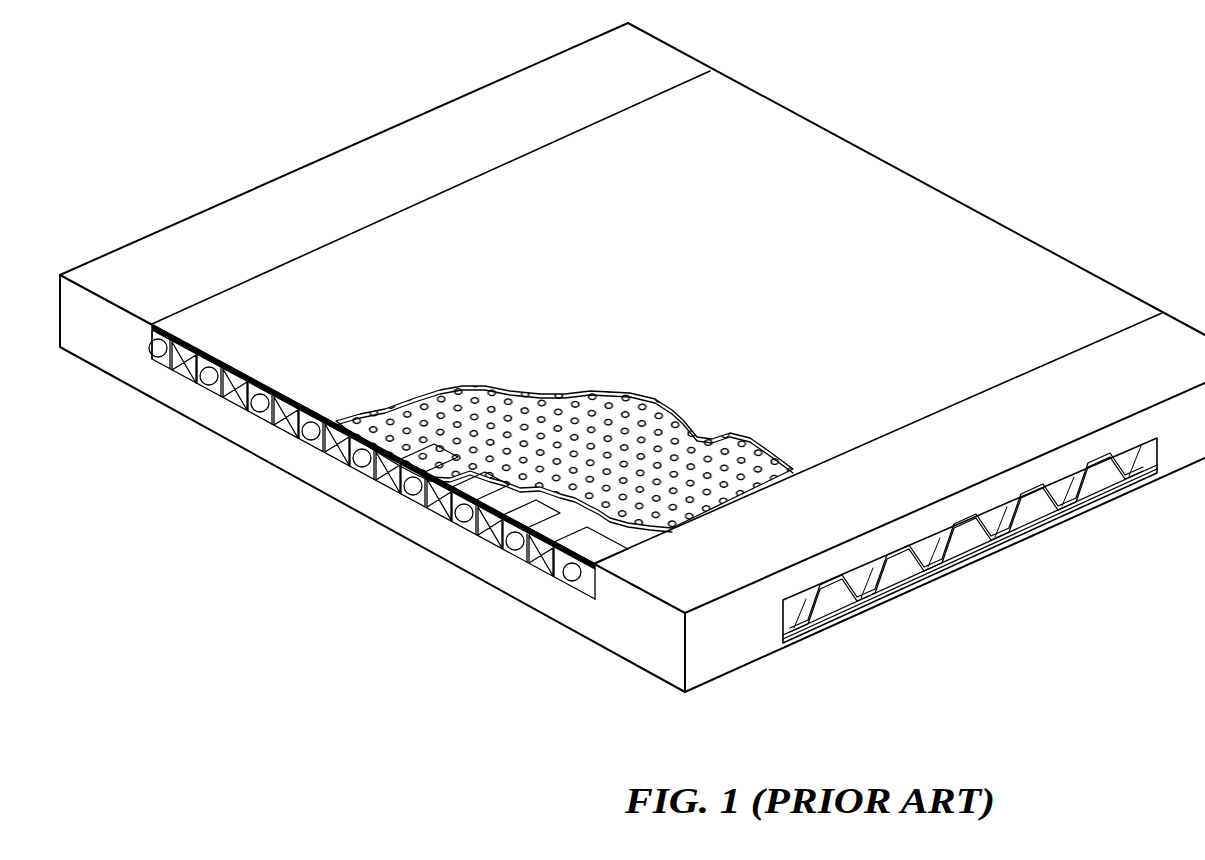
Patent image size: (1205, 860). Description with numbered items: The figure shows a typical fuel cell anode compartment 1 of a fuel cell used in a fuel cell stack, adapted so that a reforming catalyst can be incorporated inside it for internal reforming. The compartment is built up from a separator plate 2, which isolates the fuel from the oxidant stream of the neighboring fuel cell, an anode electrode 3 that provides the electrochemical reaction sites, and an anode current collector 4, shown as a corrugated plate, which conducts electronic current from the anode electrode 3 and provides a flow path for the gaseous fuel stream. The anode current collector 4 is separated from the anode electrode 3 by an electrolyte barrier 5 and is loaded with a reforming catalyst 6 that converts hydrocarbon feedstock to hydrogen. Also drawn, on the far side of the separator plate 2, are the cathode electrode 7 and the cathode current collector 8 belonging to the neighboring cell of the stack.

The fuel cell anode compartment 1 is at (880, 126).
The separator plate 2 is at (660, 653).
The anode electrode 3 is at (980, 243).
The anode current collector 4 is at (478, 488).
The electrolyte barrier 5 is at (672, 448).
The reforming catalyst 6 is at (258, 407).
The cathode electrode 7 is at (848, 617).
The cathode current collector 8 is at (963, 543).